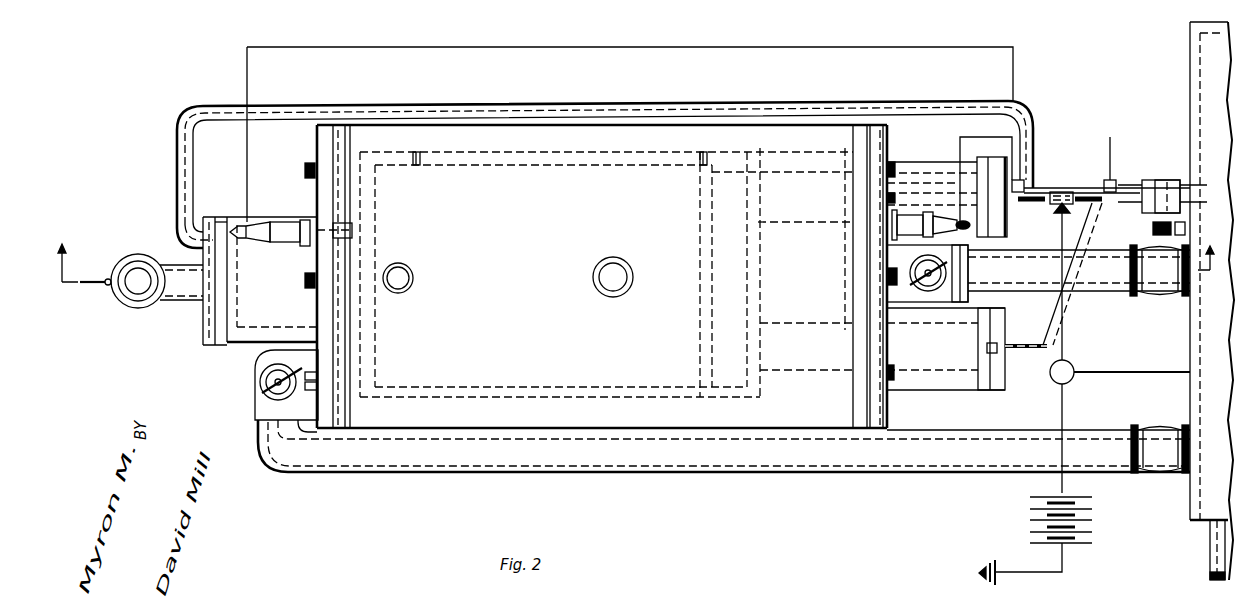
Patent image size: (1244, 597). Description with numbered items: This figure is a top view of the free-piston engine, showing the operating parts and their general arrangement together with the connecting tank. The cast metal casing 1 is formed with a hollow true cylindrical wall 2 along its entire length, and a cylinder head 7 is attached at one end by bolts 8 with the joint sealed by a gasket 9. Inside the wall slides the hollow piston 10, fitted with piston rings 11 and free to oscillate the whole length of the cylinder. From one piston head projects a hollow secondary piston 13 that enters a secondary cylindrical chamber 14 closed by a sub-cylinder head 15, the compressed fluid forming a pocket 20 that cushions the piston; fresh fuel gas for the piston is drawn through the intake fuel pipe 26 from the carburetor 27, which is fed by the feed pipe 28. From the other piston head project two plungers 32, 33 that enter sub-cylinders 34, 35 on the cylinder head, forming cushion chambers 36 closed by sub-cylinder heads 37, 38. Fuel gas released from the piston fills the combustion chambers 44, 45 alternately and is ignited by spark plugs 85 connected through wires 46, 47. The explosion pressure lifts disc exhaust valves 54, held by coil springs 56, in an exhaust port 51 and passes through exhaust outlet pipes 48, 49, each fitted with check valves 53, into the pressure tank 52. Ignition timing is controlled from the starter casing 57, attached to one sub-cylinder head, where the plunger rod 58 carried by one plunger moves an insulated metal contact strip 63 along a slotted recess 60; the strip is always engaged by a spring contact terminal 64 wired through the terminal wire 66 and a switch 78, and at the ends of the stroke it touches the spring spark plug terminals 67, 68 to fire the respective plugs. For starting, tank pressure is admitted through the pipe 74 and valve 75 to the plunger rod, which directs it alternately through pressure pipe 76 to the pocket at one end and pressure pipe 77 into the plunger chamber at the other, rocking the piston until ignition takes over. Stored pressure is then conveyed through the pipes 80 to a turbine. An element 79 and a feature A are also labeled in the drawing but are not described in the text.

The casing 1 is at (617, 123).
The cylindrical wall 2 is at (807, 147).
The cylinder head 7 is at (887, 127).
The bolts 8 is at (893, 368).
The gasket 9 is at (328, 126).
The piston 10 is at (517, 167).
The piston rings 11 is at (423, 177).
The secondary piston 13 is at (255, 328).
The secondary cylindrical chamber 14 is at (237, 217).
The sub-cylinder head 15 is at (202, 320).
The pocket 20 is at (230, 312).
The intake fuel pipe 26 is at (193, 300).
The carburetor 27 is at (117, 307).
The feed pipe 28 is at (97, 287).
The plunger 32 is at (843, 325).
The plunger 33 is at (792, 223).
The sub-cylinder 34 is at (907, 383).
The sub-cylinder 35 is at (903, 158).
The chambers 36 is at (902, 182).
The sub-cylinder head 37 is at (1008, 380).
The sub-cylinder head 38 is at (992, 190).
The combustion chamber 44 is at (780, 163).
The combustion chamber 45 is at (352, 168).
The wire 46 is at (1013, 78).
The wire 47 is at (1035, 172).
The exhaust outlet pipe 48 is at (1108, 292).
The exhaust outlet pipe 49 is at (958, 460).
The exhaust port 51 is at (860, 272).
The pressure tank 52 is at (1190, 506).
The check valves 53 is at (1170, 289).
The disc exhaust valves 54 is at (267, 383).
The coil springs 56 is at (263, 373).
The starter casing 57 is at (1141, 181).
The plunger rod 58 is at (1122, 187).
The slotted recess 60 is at (1030, 193).
The metal contact strip 63 is at (1068, 195).
The spring contact terminal 64 is at (1062, 215).
The terminal wire 66 is at (1062, 337).
The spring spark plug terminal 67 is at (1107, 180).
The spring spark plug terminal 68 is at (313, 148).
The pipe 74 is at (1189, 162).
The valve 75 is at (1170, 181).
The pressure pipe 76 is at (1030, 127).
The pressure pipe 77 is at (1062, 316).
The switch 78 is at (1072, 364).
The electric lead 79 is at (1113, 372).
The pipes 80 is at (1210, 556).
The spark plugs 85 is at (297, 217).
The inspection opening A is at (410, 272).